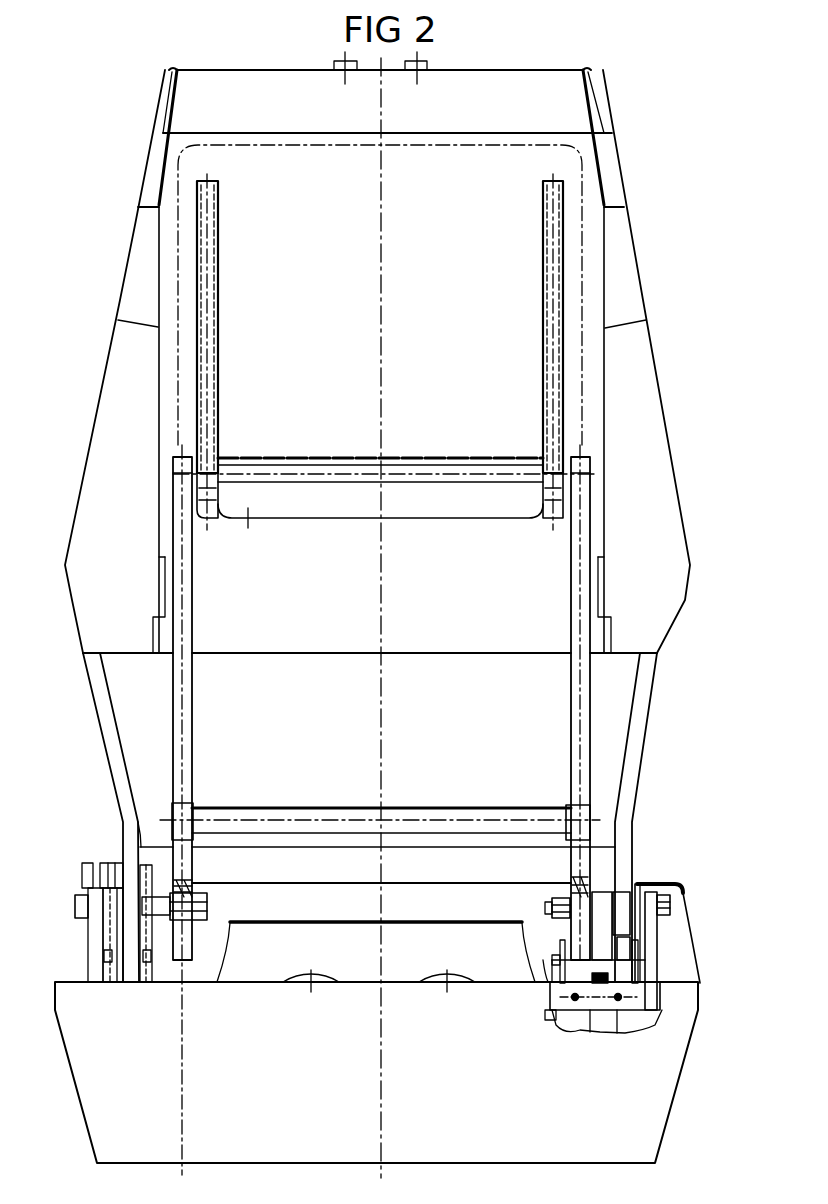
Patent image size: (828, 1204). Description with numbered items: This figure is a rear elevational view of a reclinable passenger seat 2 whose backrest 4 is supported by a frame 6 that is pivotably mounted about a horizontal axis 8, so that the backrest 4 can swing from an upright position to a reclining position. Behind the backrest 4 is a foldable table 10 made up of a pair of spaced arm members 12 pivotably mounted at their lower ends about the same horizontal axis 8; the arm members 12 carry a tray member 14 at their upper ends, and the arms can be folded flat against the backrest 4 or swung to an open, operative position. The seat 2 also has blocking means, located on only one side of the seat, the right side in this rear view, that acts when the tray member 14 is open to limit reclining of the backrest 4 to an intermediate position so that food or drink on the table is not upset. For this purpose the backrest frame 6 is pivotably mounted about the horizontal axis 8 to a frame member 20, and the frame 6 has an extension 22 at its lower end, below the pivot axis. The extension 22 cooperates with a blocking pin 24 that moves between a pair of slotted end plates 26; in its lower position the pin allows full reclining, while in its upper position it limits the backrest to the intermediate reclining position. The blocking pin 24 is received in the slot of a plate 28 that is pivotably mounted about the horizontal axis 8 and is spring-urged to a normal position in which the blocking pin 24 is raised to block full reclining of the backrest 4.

The passenger seat 2 is at (128, 241).
The backrest 4 is at (127, 372).
The frame 6 is at (108, 700).
The horizontal axis 8 is at (545, 906).
The foldable table 10 is at (168, 504).
The arm members 12 is at (190, 755).
The tray member 14 is at (233, 386).
The frame member 20 is at (648, 935).
The extension 22 is at (620, 952).
The blocking pin 24 is at (545, 990).
The slotted end plates 26 is at (635, 965).
The plate 28 is at (600, 927).